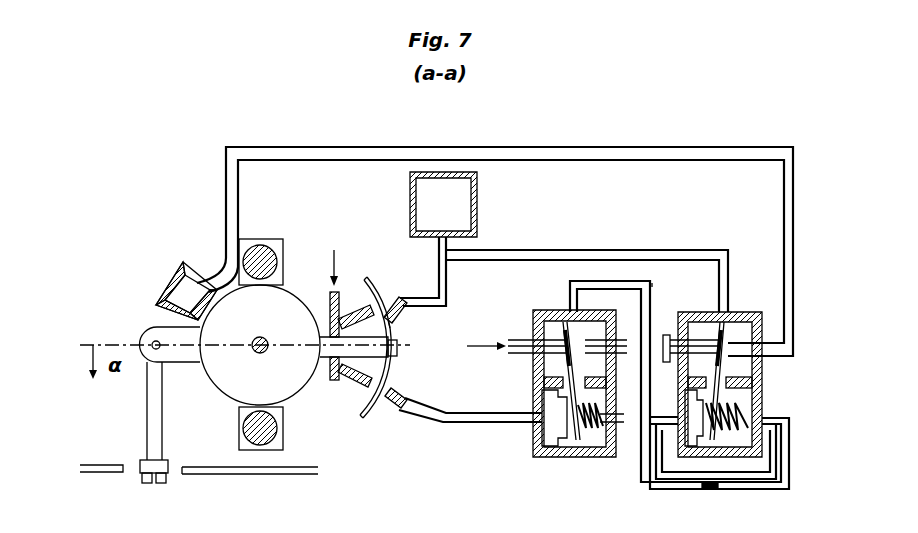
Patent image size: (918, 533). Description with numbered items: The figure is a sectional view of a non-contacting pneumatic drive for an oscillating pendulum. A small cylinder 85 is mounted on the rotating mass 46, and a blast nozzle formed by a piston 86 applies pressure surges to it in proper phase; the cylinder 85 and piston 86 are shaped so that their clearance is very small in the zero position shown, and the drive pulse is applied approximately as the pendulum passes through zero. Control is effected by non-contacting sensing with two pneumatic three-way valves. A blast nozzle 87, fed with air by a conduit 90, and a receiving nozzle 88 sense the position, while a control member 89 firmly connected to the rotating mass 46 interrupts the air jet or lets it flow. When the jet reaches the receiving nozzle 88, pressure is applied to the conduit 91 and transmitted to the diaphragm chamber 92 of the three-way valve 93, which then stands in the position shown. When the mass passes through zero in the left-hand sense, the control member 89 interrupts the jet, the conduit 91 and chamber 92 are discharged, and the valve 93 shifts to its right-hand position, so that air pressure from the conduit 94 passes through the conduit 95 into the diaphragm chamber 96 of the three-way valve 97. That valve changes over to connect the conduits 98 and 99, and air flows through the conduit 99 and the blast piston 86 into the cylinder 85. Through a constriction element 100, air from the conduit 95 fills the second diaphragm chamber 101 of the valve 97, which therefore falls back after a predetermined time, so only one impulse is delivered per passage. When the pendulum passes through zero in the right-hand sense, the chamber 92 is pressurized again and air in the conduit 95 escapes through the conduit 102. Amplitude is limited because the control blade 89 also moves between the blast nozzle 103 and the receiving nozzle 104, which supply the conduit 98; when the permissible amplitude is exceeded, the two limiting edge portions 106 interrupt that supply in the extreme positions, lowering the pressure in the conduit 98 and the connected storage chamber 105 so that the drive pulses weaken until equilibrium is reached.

The rotating mass 46 is at (227, 383).
The cylinder 85 is at (169, 277).
The piston 86 is at (195, 270).
The blast nozzle 87 is at (367, 393).
The receiving nozzle 88 is at (389, 413).
The control member 89 is at (370, 418).
The conduit 90 is at (328, 297).
The conduit 91 is at (490, 424).
The diaphragm chamber 92 is at (550, 440).
The three-way valve 93 is at (567, 328).
The conduit 94 is at (527, 343).
The conduit 95 is at (645, 281).
The diaphragm chamber 96 is at (693, 443).
The three-way valve 97 is at (739, 322).
The conduit 98 is at (718, 249).
The conduit 99 is at (783, 358).
The constriction element 100 is at (710, 489).
The second diaphragm chamber 101 is at (743, 438).
The conduit 102 is at (625, 330).
The blast nozzle 103 is at (372, 313).
The receiving nozzle 104 is at (388, 298).
The storage chamber 105 is at (447, 187).
The limiting edge portions 106 is at (390, 325).